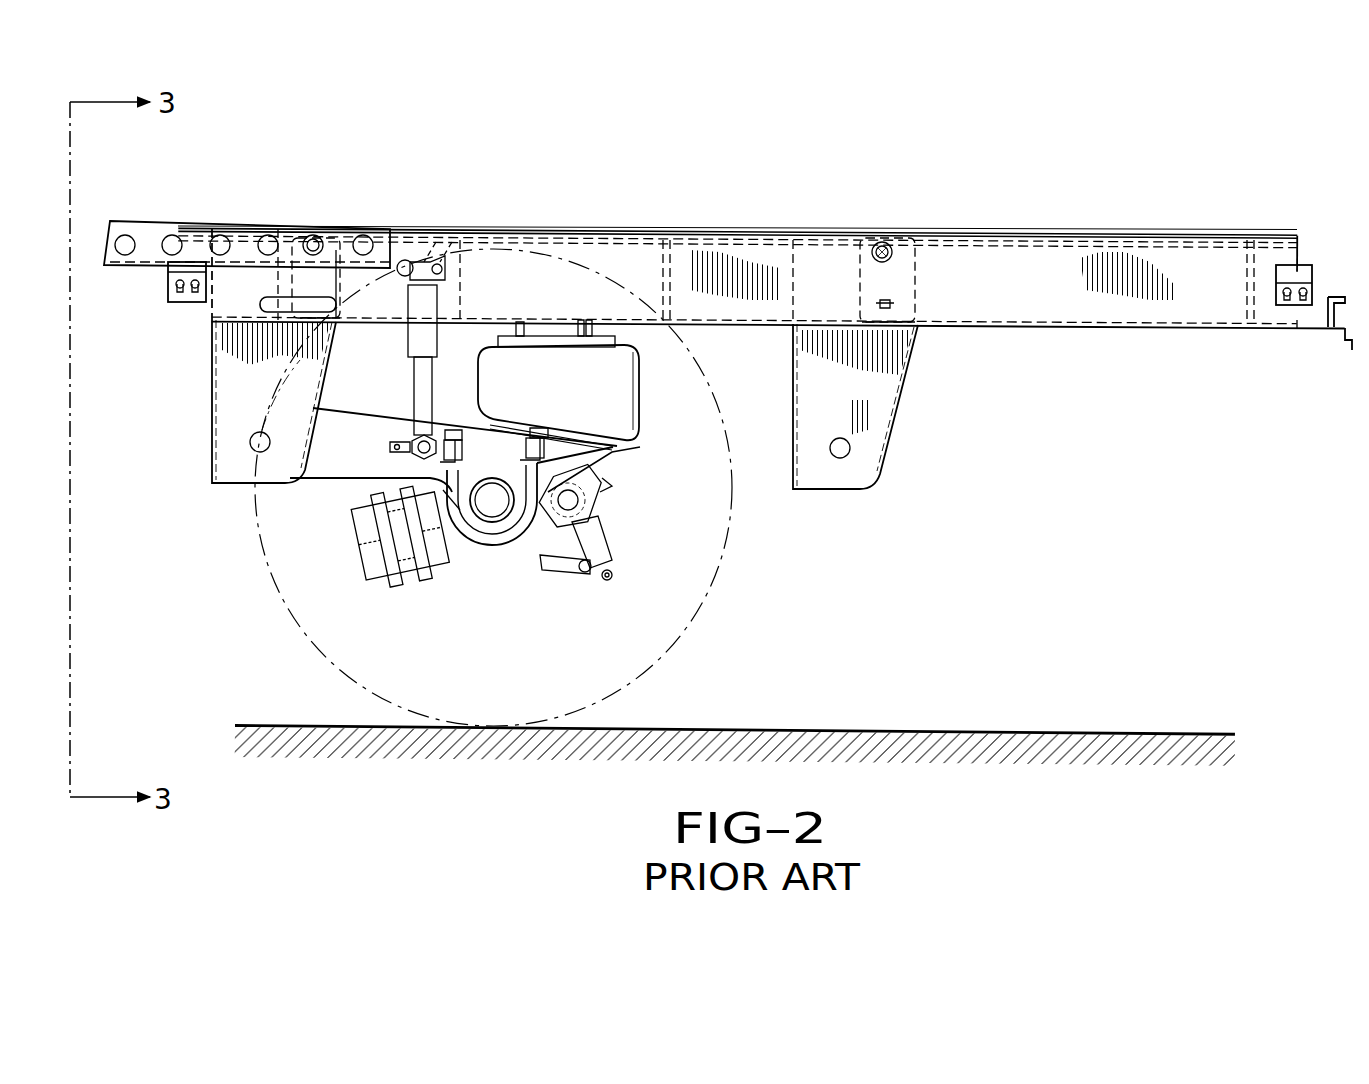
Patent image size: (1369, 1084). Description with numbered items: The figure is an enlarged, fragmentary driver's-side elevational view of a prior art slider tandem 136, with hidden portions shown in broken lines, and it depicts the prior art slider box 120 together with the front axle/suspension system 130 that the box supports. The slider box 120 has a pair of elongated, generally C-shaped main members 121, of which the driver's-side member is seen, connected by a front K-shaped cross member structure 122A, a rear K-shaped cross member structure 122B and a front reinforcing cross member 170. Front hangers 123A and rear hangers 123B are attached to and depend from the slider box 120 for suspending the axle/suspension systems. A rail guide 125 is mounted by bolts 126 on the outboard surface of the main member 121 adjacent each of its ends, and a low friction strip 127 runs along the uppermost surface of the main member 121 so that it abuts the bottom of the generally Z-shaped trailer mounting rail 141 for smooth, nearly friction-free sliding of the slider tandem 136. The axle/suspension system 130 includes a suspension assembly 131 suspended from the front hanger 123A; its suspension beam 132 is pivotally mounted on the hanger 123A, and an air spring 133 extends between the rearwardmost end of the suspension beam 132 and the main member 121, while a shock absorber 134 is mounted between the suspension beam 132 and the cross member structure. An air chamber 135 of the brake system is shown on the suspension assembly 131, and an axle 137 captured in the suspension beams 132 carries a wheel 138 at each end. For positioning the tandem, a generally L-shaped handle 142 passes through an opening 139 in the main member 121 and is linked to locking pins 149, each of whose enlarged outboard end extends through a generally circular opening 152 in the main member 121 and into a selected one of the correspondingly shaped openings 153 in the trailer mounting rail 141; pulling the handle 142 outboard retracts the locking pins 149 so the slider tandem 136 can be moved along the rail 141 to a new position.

The slider box 120 is at (1022, 230).
The main member 121 is at (1168, 322).
The front K-shaped cross member structure 122A is at (668, 256).
The rear K-shaped cross member structure 122B is at (1252, 310).
The front hanger 123A is at (210, 442).
The rear hanger 123B is at (900, 405).
The rail guide 125 is at (185, 295).
The bolt 126 is at (178, 282).
The low friction strip 127 is at (591, 227).
The axle/suspension system 130 is at (603, 478).
The suspension assembly 131 is at (310, 484).
The suspension beam 132 is at (337, 458).
The air spring 133 is at (588, 397).
The shock absorber 134 is at (422, 382).
The air chamber 135 is at (366, 562).
The slider tandem 136 is at (745, 205).
The axle 137 is at (492, 535).
The wheel 138 is at (712, 608).
The opening 139 is at (333, 300).
The trailer mounting rail 141 is at (153, 222).
The handle 142 is at (292, 304).
The locking pin 149 is at (313, 236).
The opening 152 is at (305, 246).
The opening 153 is at (125, 243).
The front reinforcing cross member 170 is at (228, 250).